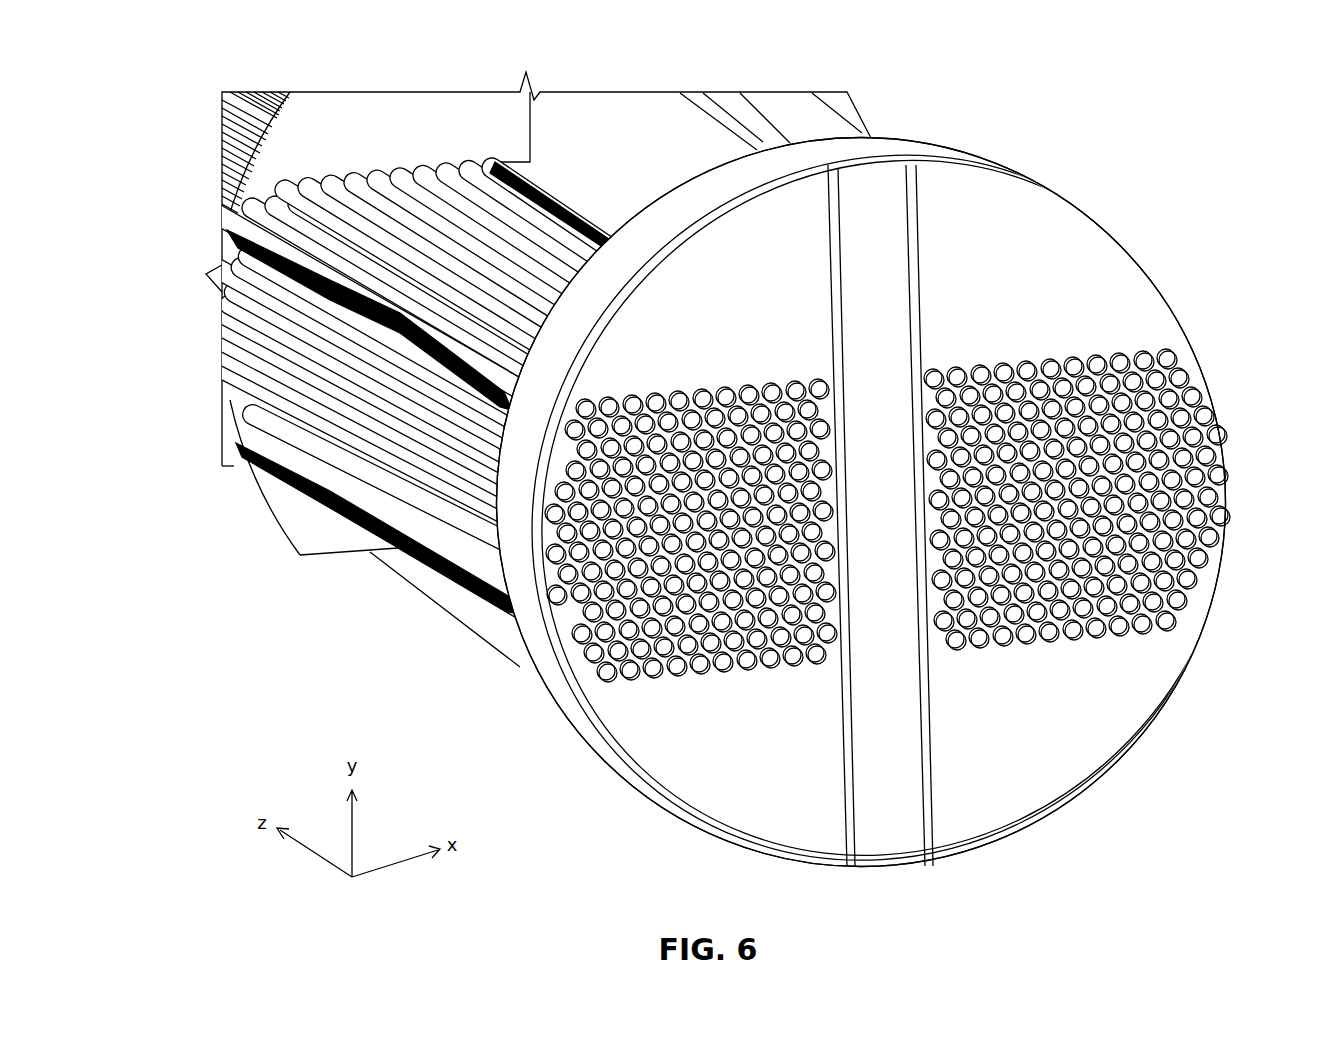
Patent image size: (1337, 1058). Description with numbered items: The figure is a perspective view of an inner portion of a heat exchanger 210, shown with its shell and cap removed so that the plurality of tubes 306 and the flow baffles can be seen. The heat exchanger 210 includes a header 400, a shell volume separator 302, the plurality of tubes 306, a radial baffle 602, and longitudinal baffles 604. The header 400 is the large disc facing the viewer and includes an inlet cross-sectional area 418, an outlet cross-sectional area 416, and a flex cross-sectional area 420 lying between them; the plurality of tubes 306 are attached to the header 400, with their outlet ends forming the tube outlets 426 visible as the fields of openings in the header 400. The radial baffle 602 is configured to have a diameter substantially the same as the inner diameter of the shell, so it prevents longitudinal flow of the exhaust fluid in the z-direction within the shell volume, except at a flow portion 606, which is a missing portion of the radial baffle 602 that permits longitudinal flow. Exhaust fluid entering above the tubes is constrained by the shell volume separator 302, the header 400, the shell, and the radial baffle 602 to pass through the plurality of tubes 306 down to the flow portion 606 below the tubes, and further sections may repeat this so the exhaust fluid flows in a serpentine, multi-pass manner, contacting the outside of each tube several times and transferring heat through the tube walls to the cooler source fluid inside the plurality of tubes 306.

The heat exchanger 210 is at (1212, 101).
The shell volume separator 302 is at (783, 108).
The plurality of tubes 306 is at (421, 228).
The header 400 is at (1058, 169).
The outlet cross-sectional area 416 is at (706, 745).
The inlet cross-sectional area 418 is at (1060, 730).
The flex cross-sectional area 420 is at (881, 822).
The tube outlets 426 is at (1192, 396).
The radial baffle 602 is at (350, 132).
The longitudinal baffles 604 is at (285, 275).
The flow portion 606 is at (368, 575).